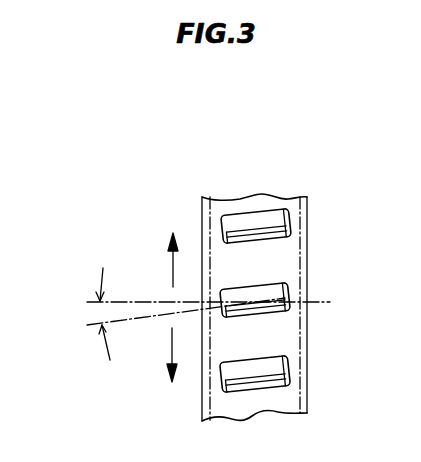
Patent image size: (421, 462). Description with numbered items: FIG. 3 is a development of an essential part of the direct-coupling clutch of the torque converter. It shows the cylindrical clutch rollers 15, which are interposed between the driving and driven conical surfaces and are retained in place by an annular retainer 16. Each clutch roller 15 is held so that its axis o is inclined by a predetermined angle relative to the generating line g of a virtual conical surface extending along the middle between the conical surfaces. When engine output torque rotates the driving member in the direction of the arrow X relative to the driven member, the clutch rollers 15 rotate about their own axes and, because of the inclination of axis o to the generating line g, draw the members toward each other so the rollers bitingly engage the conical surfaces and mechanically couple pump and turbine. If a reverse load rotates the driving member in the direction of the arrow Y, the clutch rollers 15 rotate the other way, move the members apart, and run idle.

The clutch roller 15 is at (243, 216).
The annular retainer 16 is at (270, 198).
The arrow X is at (175, 246).
The arrow Y is at (174, 372).
The generating line g is at (123, 302).
The axis o is at (130, 319).